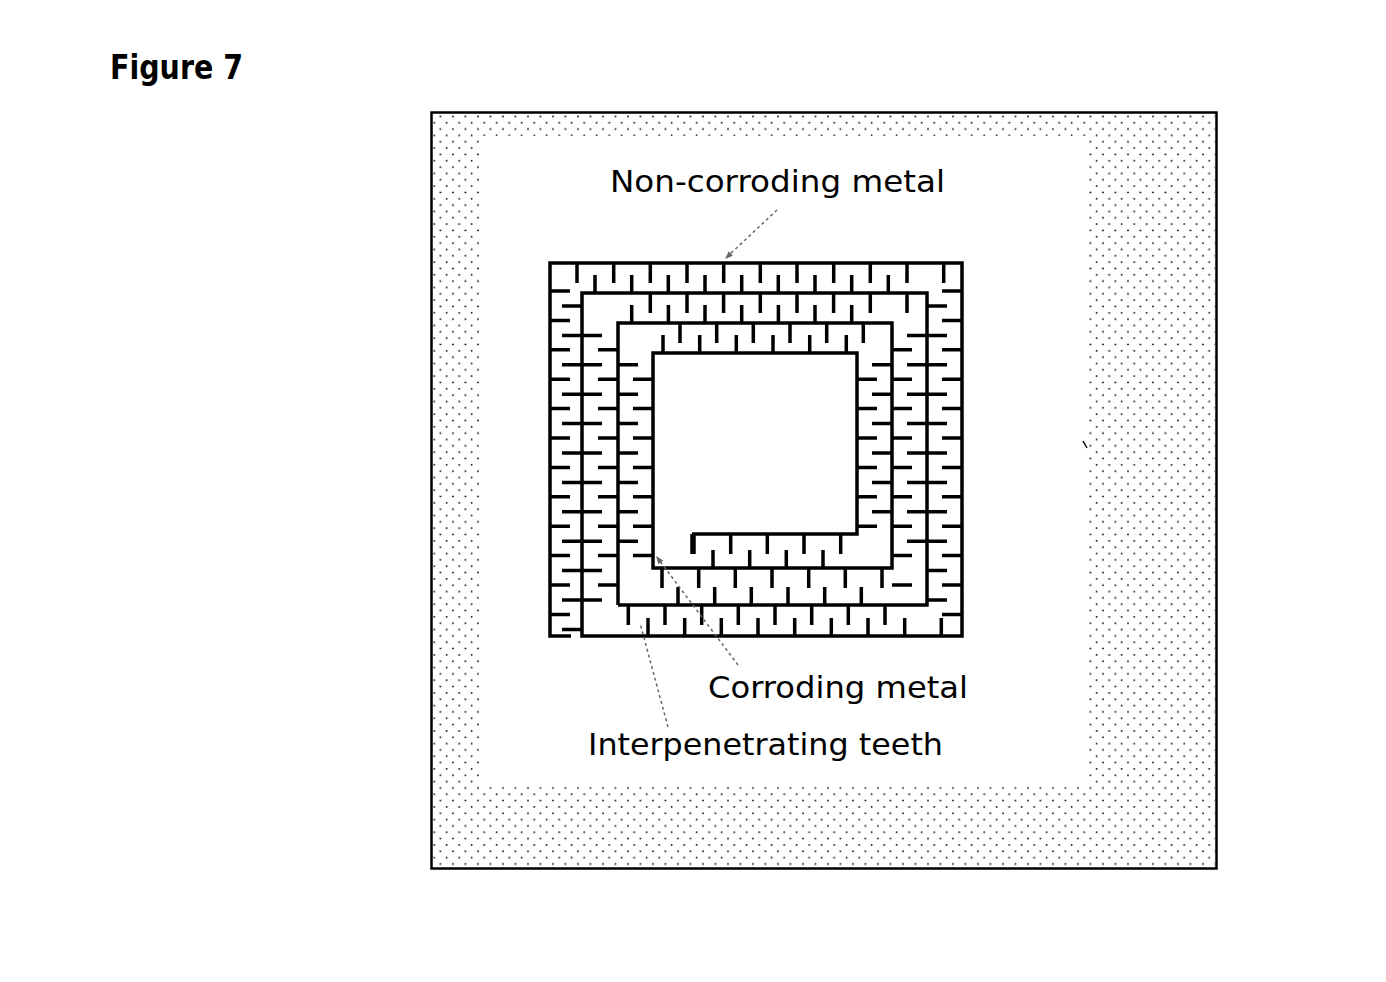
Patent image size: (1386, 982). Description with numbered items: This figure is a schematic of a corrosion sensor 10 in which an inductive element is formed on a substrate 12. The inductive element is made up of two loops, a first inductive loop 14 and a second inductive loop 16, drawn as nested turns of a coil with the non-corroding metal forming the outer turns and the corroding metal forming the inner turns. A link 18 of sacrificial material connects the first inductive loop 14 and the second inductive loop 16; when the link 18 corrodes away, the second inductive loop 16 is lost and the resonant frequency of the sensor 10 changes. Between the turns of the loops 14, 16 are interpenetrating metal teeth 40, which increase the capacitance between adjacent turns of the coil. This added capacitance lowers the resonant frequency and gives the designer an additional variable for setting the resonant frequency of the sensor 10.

The corrosion sensor 10 is at (370, 158).
The substrate 12 is at (497, 192).
The first inductive loop 14 is at (545, 481).
The second inductive loop 16 is at (862, 528).
The link 18 is at (645, 551).
The interpenetrating metal teeth 40 is at (775, 513).